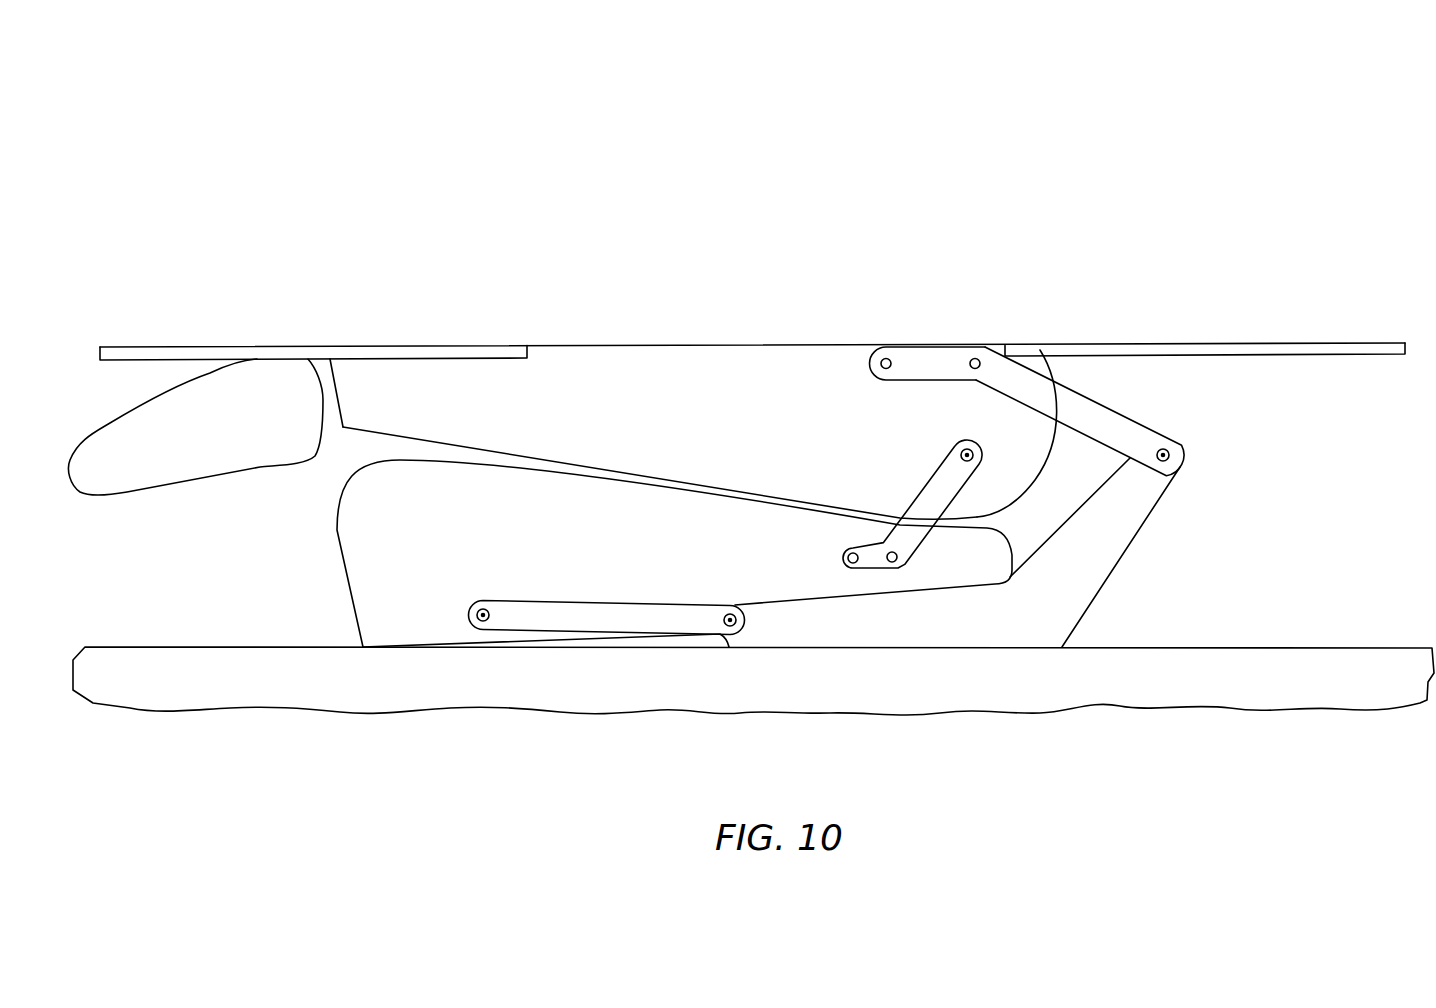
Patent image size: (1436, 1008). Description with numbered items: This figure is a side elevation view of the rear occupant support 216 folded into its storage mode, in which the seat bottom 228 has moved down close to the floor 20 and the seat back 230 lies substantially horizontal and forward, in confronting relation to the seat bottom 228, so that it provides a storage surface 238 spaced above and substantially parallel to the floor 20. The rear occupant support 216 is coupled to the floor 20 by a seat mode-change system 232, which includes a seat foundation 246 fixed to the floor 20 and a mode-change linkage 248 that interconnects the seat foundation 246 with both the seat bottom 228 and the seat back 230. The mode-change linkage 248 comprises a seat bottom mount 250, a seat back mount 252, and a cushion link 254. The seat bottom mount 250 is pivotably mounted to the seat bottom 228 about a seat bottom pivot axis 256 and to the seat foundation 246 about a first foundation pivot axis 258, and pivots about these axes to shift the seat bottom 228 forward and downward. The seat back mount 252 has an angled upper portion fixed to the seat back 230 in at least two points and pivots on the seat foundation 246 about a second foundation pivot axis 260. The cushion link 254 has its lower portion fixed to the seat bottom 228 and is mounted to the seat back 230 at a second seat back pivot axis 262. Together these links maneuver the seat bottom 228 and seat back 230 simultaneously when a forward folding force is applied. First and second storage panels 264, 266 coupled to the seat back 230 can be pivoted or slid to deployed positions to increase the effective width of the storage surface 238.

The rear occupant support 216 is at (986, 138).
The floor 20 is at (268, 647).
The seat back 230 is at (691, 362).
The first storage panel 264 is at (226, 346).
The second storage panel 266 is at (1242, 343).
The storage surface 238 is at (832, 343).
The seat bottom 228 is at (356, 549).
The mode-change linkage 248 is at (561, 577).
The seat mode-change system 232 is at (1217, 413).
The seat back mount 252 is at (1123, 435).
The second foundation pivot axis 260 is at (1183, 452).
The seat foundation 246 is at (1075, 571).
The cushion link 254 is at (940, 470).
The second seat back pivot axis 262 is at (978, 455).
The seat bottom mount 250 is at (642, 620).
The seat bottom pivot axis 256 is at (480, 600).
The first foundation pivot axis 258 is at (733, 612).